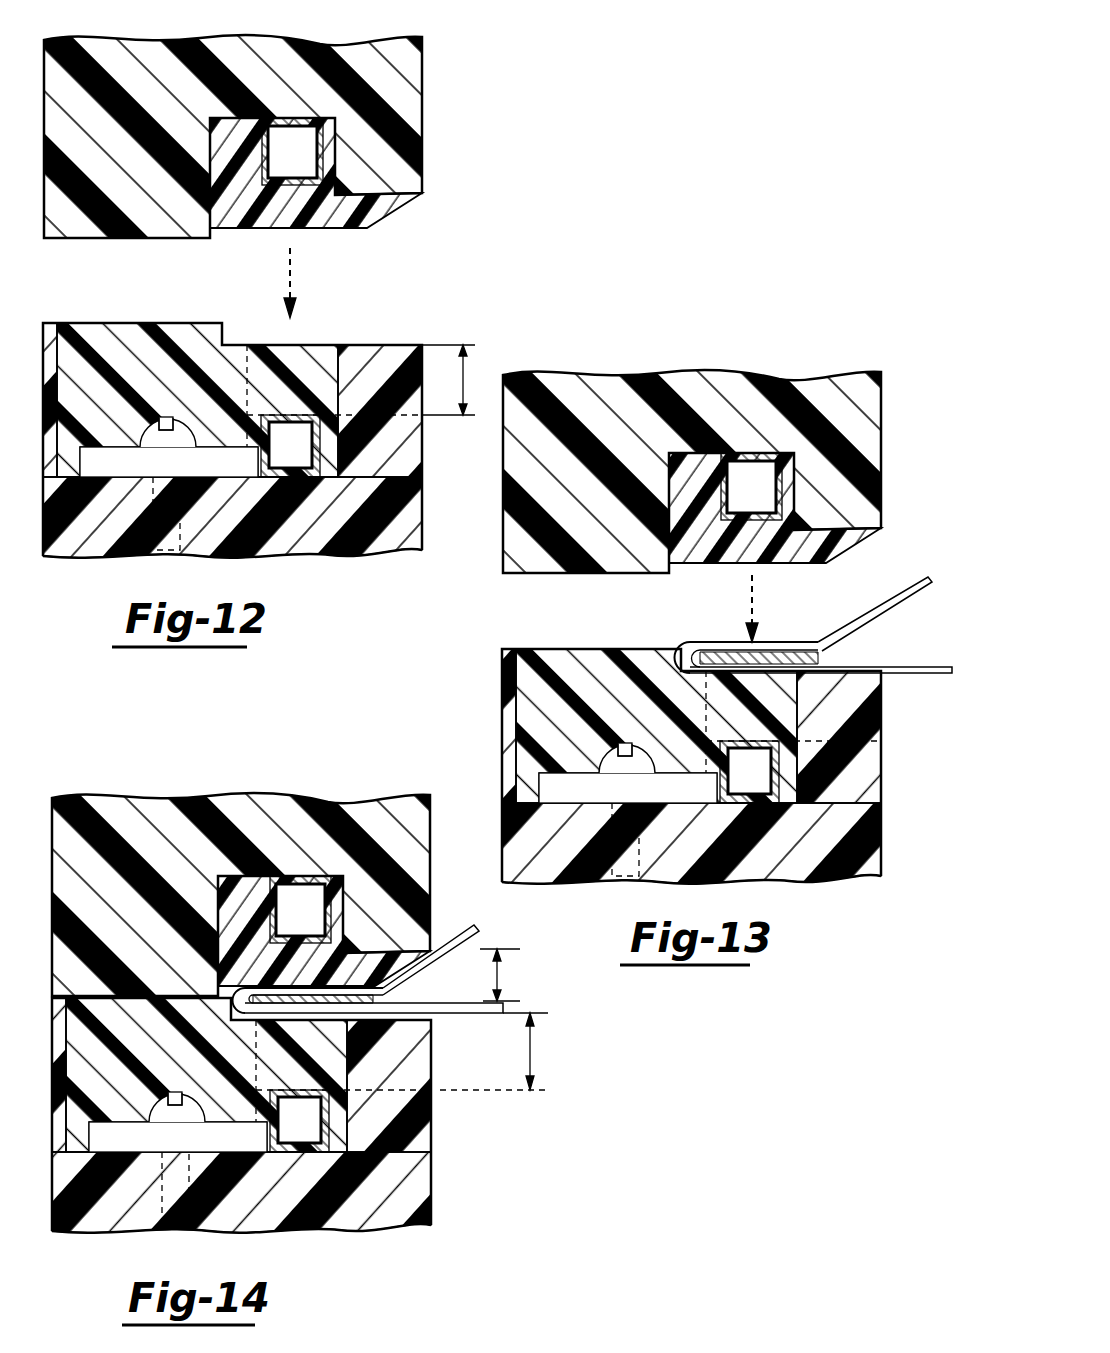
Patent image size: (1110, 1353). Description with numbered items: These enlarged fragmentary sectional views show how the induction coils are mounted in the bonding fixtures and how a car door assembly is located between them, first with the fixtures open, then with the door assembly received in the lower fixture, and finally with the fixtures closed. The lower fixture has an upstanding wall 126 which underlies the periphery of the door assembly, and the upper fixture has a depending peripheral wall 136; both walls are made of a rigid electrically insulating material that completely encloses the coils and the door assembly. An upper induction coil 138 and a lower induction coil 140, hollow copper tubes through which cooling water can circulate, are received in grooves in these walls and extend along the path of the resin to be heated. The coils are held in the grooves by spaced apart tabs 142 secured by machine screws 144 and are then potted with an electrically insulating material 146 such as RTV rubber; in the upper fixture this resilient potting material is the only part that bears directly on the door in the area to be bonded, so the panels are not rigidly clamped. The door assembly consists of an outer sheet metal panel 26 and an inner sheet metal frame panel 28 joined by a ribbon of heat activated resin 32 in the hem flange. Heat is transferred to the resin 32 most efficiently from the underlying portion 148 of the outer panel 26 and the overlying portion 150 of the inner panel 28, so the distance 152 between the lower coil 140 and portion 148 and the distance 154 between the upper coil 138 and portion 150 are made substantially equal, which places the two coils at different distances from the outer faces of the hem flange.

In FIG. 13, the outer sheet metal panel 26 is at (896, 676).
In FIG. 14, the outer sheet metal panel 26 is at (475, 1016).
In FIG. 13, the inner sheet metal frame panel 28 is at (925, 582).
In FIG. 14, the inner sheet metal frame panel 28 is at (483, 932).
In FIG. 13, the heat activated plastic adhesive or resin 32 is at (818, 660).
In FIG. 14, the heat activated plastic adhesive or resin 32 is at (320, 1000).
In FIG. 12, the upstanding wall 126 is at (102, 545).
In FIG. 13, the upstanding wall 126 is at (545, 845).
In FIG. 14, the upstanding wall 126 is at (73, 1240).
In FIG. 12, the depending peripheral wall 136 is at (110, 65).
In FIG. 13, the depending peripheral wall 136 is at (504, 508).
In FIG. 14, the depending peripheral wall 136 is at (116, 822).
In FIG. 12, the induction coil 138 is at (323, 155).
In FIG. 13, the induction coil 138 is at (785, 487).
In FIG. 14, the induction coil 138 is at (333, 928).
In FIG. 12, the induction coil 140 is at (377, 447).
In FIG. 13, the induction coil 140 is at (830, 775).
In FIG. 14, the induction coil 140 is at (360, 1118).
In FIG. 12, the tabs 142 is at (80, 478).
In FIG. 13, the tabs 142 is at (543, 785).
In FIG. 14, the tabs 142 is at (140, 1152).
In FIG. 12, the machine screws 144 is at (147, 425).
In FIG. 13, the machine screws 144 is at (612, 753).
In FIG. 14, the machine screws 144 is at (215, 1120).
In FIG. 12, the electrically insulating material 146 is at (238, 142).
In FIG. 13, the electrically insulating material 146 is at (692, 462).
In FIG. 14, the electrically insulating material 146 is at (248, 900).
In FIG. 13, the underlying portion 148 is at (790, 684).
In FIG. 14, the underlying portion 148 is at (373, 1050).
In FIG. 14, the overlying portion 150 is at (432, 911).
In FIG. 12, the distance 152 is at (466, 380).
In FIG. 14, the distance 152 is at (535, 1052).
In FIG. 14, the distance 154 is at (500, 976).